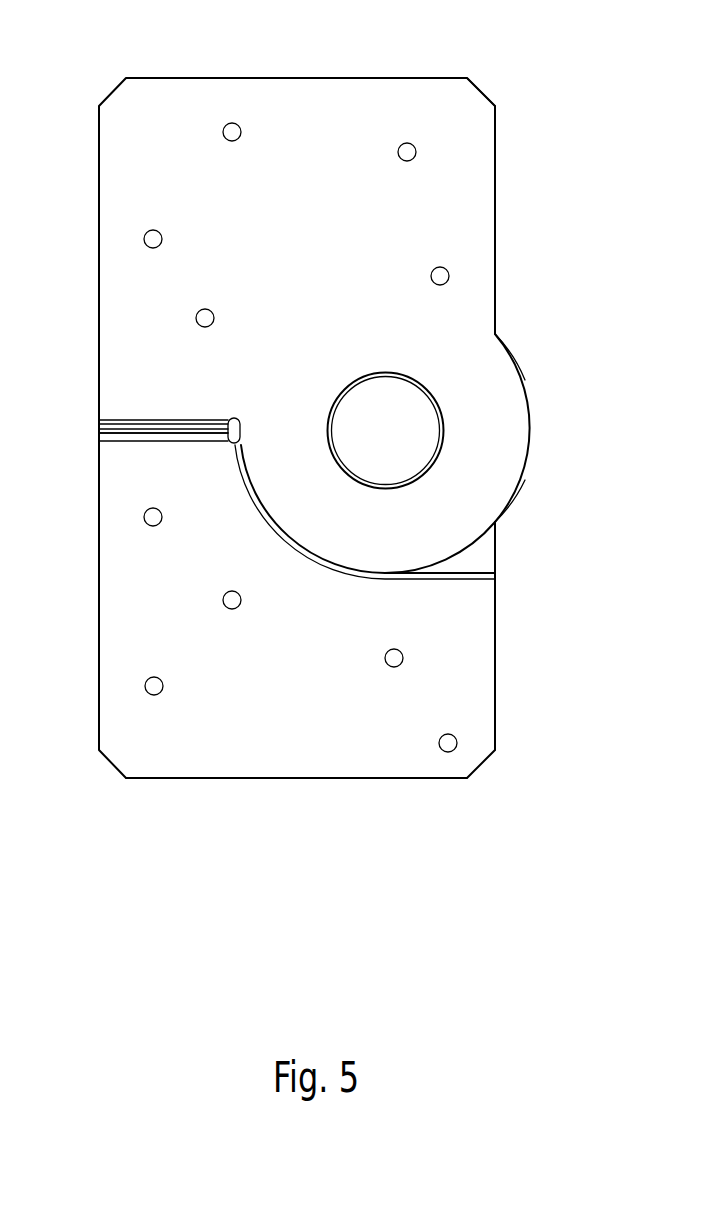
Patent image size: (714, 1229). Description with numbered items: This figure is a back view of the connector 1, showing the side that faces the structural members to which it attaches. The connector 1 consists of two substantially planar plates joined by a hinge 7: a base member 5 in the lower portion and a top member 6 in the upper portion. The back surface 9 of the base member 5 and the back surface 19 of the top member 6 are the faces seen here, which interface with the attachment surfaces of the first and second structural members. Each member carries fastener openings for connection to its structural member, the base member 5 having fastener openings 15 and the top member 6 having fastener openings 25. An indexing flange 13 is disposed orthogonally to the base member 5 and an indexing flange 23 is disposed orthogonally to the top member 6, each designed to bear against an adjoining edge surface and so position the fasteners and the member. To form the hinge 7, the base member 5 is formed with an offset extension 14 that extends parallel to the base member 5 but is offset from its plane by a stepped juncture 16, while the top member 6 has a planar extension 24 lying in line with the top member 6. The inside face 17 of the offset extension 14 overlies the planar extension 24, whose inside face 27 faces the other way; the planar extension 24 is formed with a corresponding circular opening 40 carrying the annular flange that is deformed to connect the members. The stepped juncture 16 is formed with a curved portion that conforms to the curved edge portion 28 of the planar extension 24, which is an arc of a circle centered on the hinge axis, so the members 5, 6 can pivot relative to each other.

The connector 1 is at (466, 80).
The base member 5 is at (497, 630).
The top member 6 is at (496, 265).
The hinge 7 is at (530, 430).
The back surface 9 is at (416, 754).
The indexing flange 13 is at (99, 437).
The offset extension 14 is at (458, 563).
The fastener openings 15 is at (156, 526).
The stepped juncture 16 is at (288, 534).
The inside face 17 is at (470, 570).
The back surface 19 is at (460, 138).
The indexing flange 23 is at (99, 424).
The planar extension 24 is at (503, 483).
The fastener openings 25 is at (241, 132).
The inside face 27 is at (478, 392).
The curved edge portion 28 is at (238, 480).
The corresponding circular opening 40 is at (336, 442).